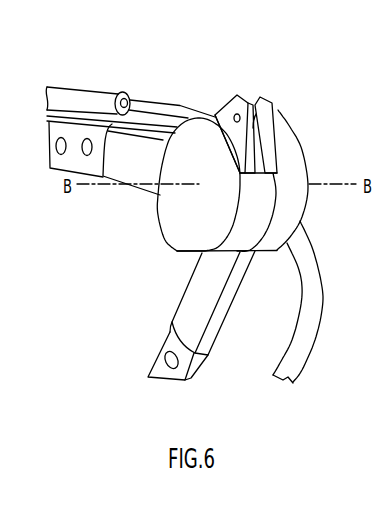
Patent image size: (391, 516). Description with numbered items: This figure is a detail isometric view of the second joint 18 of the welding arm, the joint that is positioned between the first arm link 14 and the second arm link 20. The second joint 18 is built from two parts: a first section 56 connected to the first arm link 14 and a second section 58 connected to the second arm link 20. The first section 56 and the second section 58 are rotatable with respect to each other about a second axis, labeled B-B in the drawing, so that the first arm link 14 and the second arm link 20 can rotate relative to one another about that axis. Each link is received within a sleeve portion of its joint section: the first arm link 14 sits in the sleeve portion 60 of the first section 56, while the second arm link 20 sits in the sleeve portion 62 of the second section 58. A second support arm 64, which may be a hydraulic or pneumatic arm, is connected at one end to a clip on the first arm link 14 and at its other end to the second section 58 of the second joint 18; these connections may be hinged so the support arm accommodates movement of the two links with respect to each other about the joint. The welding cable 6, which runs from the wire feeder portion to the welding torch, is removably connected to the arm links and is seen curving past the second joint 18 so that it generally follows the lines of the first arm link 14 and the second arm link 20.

The welding cable 6 is at (323, 297).
The first arm link 14 is at (50, 171).
The second joint 18 is at (298, 98).
The second arm link 20 is at (164, 373).
The first section 56 is at (172, 208).
The second section 58 is at (287, 149).
The sleeve portion 60 is at (162, 130).
The sleeve portion 62 is at (183, 313).
The second support arm 64 is at (114, 84).